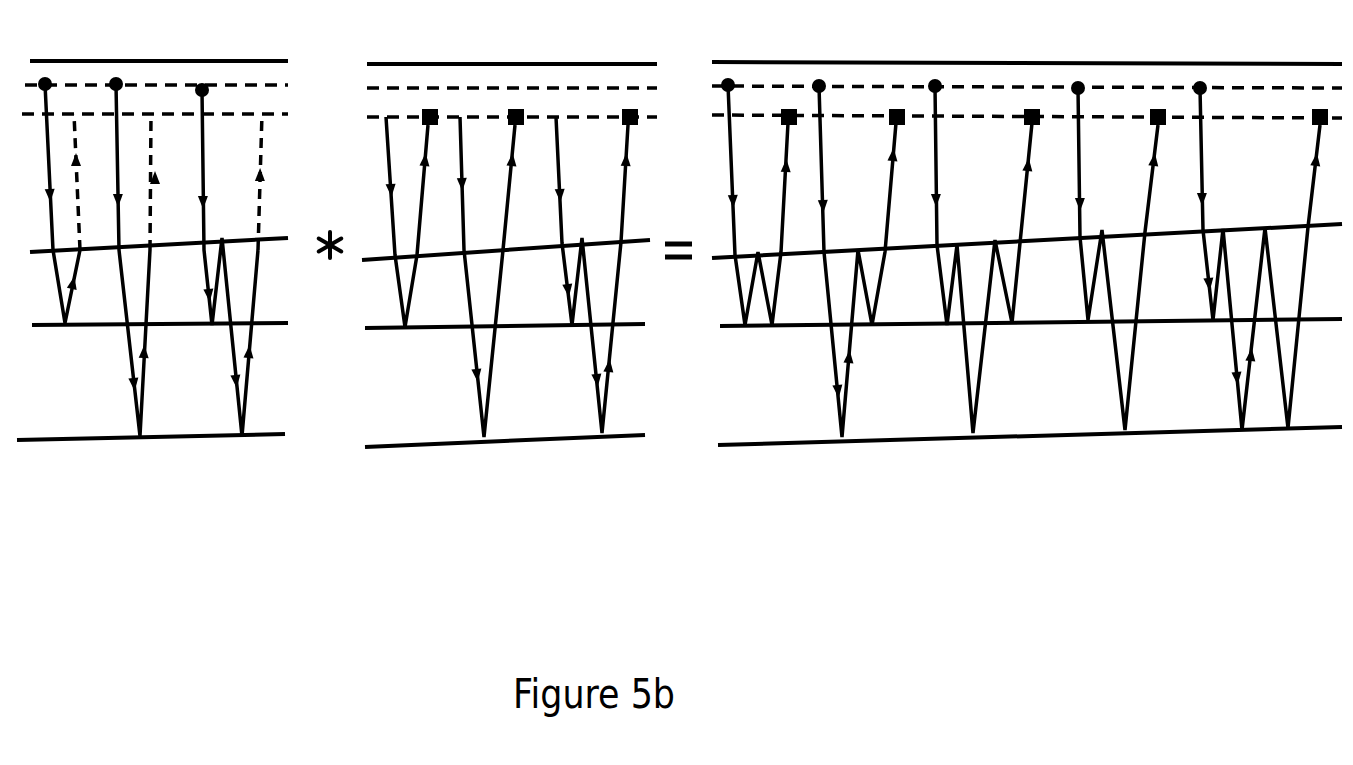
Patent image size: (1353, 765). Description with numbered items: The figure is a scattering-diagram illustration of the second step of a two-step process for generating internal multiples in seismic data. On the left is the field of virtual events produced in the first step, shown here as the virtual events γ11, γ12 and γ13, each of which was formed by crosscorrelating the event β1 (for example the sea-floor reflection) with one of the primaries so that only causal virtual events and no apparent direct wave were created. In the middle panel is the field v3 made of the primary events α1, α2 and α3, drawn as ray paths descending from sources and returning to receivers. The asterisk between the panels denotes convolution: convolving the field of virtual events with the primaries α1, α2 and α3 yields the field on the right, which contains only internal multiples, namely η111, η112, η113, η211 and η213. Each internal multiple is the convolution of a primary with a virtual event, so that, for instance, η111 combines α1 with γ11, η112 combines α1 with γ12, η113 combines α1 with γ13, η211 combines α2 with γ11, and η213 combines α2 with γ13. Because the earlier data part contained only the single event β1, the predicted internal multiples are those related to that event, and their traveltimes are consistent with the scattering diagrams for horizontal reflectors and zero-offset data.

The virtual event γ 11 is at (72, 227).
The virtual event γ 12 is at (125, 352).
The virtual event γ 13 is at (228, 343).
The primary event α 1 is at (408, 243).
The primary event α 2 is at (465, 343).
The primary event α 3 is at (580, 343).
The internal multiple η 111 is at (761, 228).
The internal multiple η 112 is at (827, 367).
The internal multiple η 113 is at (965, 368).
The internal multiple η 211 is at (1108, 348).
The internal multiple η 213 is at (1230, 350).